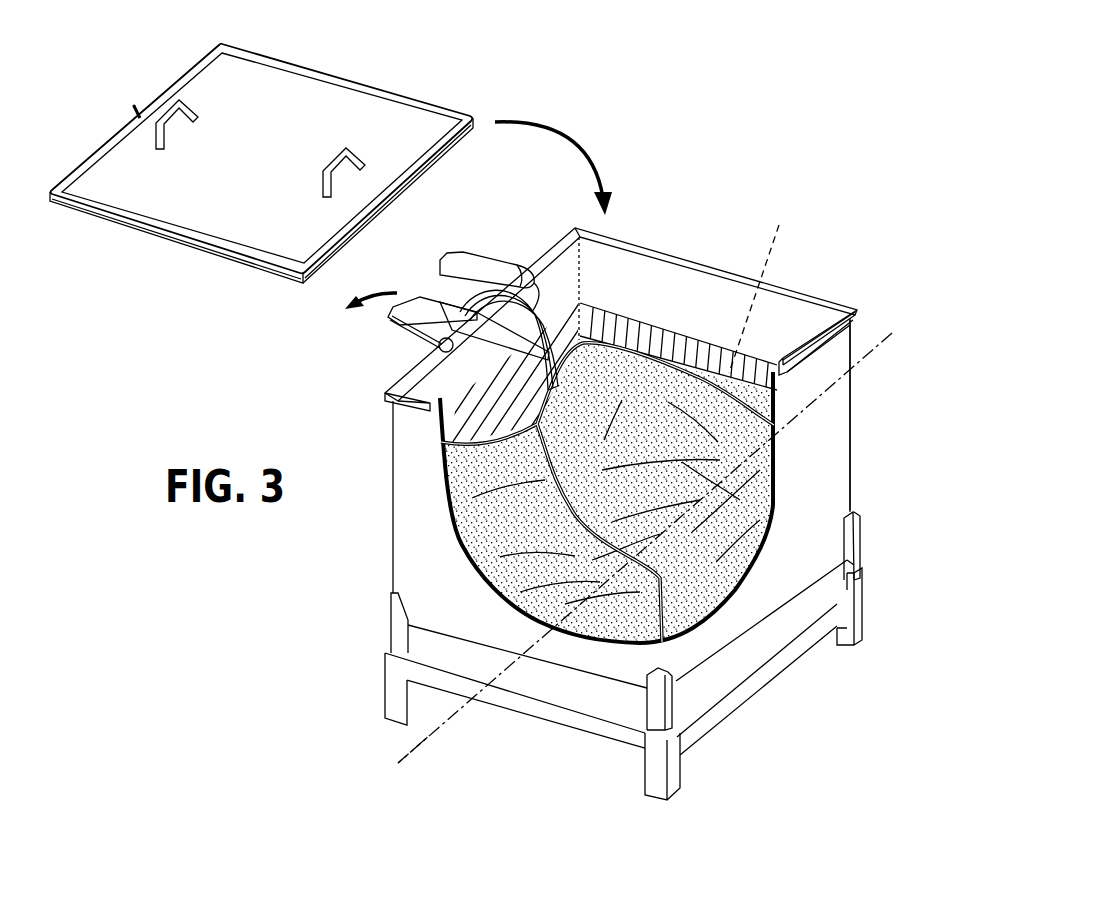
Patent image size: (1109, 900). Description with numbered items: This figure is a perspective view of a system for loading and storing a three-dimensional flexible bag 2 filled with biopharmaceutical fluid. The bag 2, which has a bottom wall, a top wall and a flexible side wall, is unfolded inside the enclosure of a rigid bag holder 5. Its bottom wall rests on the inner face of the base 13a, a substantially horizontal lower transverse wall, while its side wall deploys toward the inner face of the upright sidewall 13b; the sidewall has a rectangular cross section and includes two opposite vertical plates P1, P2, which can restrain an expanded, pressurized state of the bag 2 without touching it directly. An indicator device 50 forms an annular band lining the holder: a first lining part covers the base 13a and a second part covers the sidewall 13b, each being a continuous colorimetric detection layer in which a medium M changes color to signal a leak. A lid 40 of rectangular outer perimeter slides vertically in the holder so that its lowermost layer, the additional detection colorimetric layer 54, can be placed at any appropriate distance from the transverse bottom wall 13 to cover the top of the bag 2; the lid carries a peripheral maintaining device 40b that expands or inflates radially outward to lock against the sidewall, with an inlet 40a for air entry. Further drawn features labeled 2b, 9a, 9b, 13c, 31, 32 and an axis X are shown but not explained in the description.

The bag 2 is at (696, 360).
The container inner bag portion 2b is at (604, 377).
The bag holder 5 is at (797, 320).
The tube 9a is at (540, 308).
The tube 9b is at (545, 380).
The transverse bottom wall 13 is at (370, 619).
The base 13a is at (742, 623).
The sidewall 13b is at (830, 435).
The frame top edge 13c is at (789, 364).
The bag 31 is at (745, 535).
The spout flap 32 is at (462, 447).
The lid 40 is at (386, 120).
The inlet 40a is at (135, 107).
The peripheral maintaining device 40b is at (125, 213).
The indicator device 50 is at (656, 343).
The additional detection colorimetric layer 54 is at (233, 257).
The medium M is at (761, 285).
The first plate P1 is at (433, 392).
The second plate P2 is at (788, 387).
The axis X is at (414, 759).